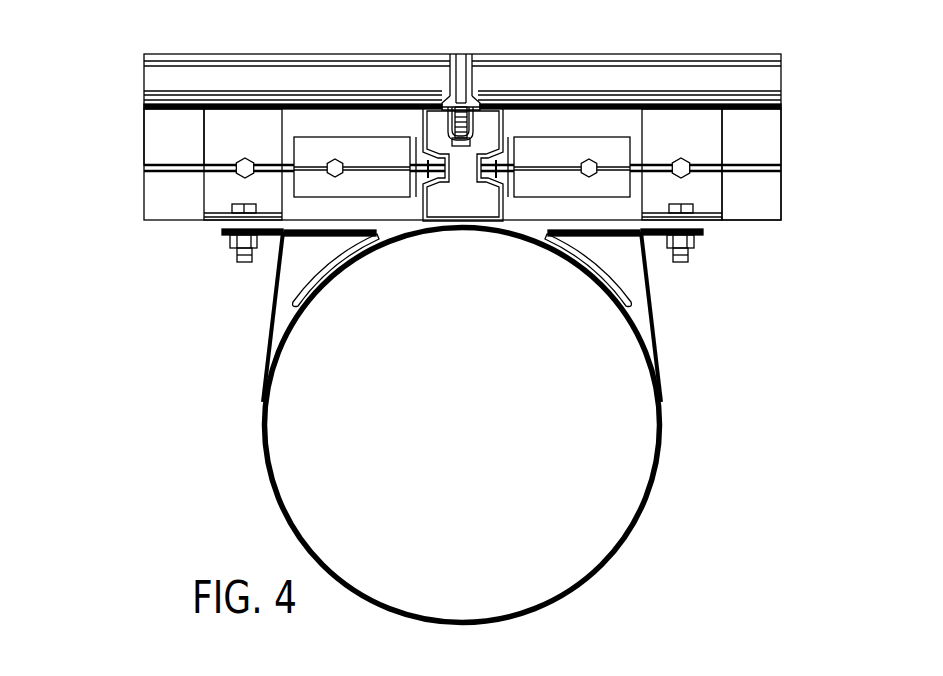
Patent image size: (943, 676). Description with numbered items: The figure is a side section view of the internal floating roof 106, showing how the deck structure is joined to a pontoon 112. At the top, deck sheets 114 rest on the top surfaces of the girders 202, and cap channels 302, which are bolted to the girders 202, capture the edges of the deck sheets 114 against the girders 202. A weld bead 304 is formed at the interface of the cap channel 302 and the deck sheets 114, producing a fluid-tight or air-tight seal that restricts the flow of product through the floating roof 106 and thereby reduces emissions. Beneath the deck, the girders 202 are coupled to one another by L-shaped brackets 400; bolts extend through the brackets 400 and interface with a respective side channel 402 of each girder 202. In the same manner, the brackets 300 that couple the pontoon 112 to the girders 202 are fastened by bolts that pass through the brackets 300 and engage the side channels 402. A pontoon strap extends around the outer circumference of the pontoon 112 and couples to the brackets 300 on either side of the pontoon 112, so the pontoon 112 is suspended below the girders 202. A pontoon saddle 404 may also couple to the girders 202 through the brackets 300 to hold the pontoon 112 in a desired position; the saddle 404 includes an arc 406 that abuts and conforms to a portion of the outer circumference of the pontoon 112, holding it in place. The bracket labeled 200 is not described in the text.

The internal floating roof 106 is at (58, 136).
The deck sheets 114 is at (251, 100).
The cap channel 302 is at (572, 55).
The weld bead 304 is at (175, 112).
The side channel 402 is at (160, 170).
The bracket 300 is at (215, 188).
The L-shaped bracket 400 is at (377, 153).
The center connector 200 is at (498, 200).
The girder 202 is at (782, 140).
The arc 406 is at (326, 266).
The pontoon saddle 404 is at (608, 278).
The pontoon 112 is at (280, 516).